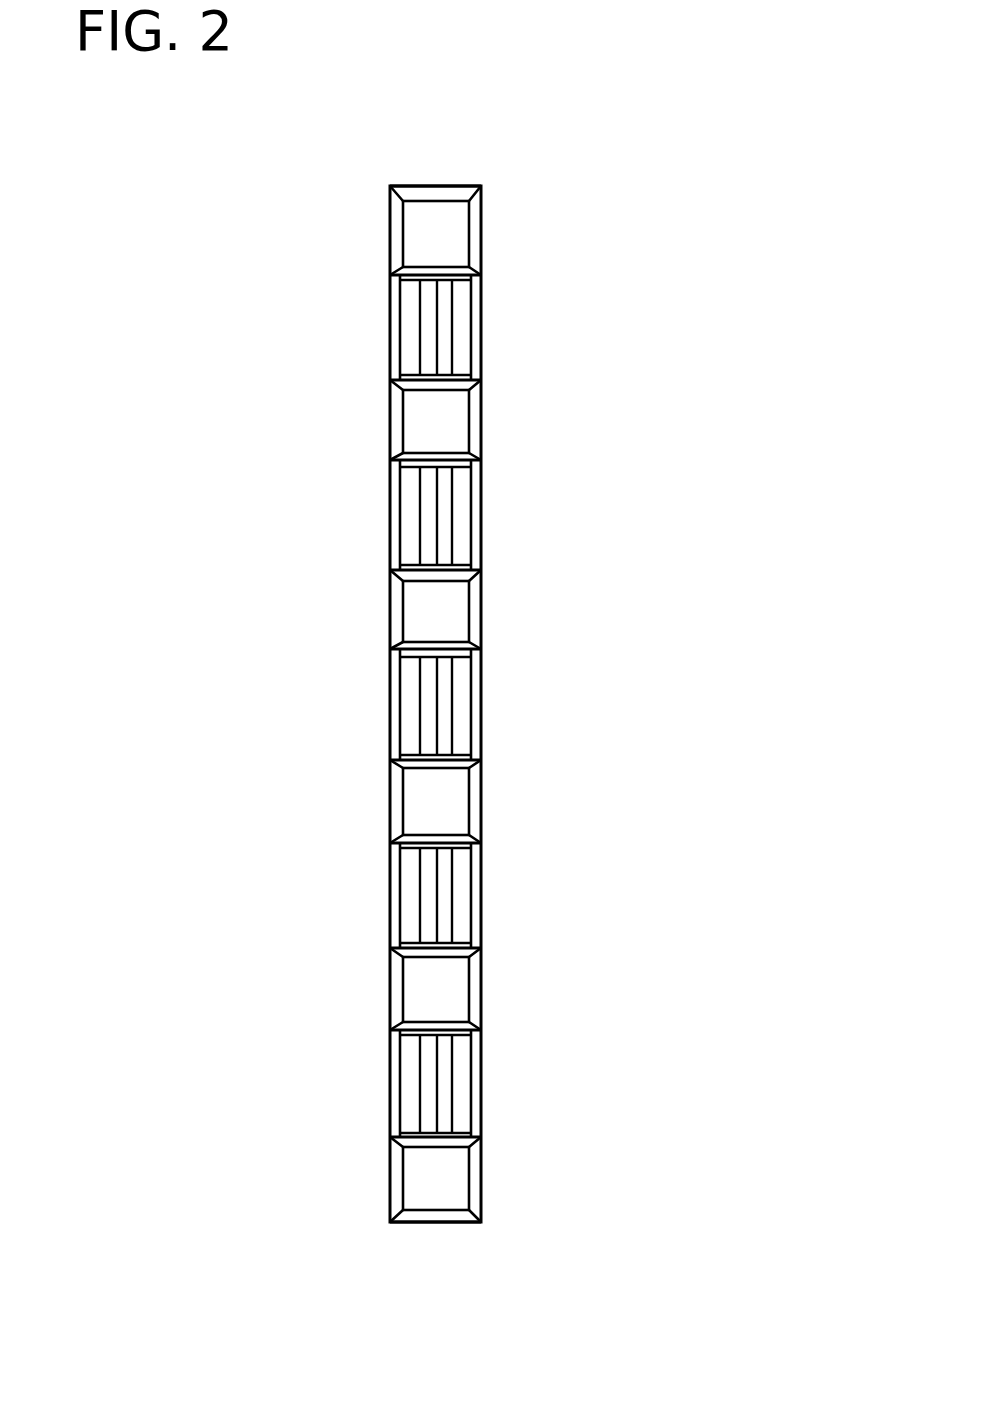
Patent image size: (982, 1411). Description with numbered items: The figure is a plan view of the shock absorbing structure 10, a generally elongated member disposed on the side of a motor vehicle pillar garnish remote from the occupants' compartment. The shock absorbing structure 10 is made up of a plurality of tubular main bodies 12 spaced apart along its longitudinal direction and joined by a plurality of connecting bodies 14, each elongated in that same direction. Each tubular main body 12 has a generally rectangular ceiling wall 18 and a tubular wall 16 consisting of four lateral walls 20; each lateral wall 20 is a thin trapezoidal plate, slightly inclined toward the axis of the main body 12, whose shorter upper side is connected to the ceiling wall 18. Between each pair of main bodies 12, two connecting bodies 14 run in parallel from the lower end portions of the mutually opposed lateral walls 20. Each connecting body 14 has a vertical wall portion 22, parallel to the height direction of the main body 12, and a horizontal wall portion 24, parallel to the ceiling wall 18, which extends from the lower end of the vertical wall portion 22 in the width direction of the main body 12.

The shock absorbing structure 10 is at (480, 717).
The tubular main body 12 is at (442, 712).
The connecting body 14 is at (430, 698).
The tubular wall 16 is at (485, 255).
The ceiling wall 18 is at (455, 229).
The lateral wall 20 is at (390, 240).
The vertical wall portion 22 is at (393, 358).
The horizontal wall portion 24 is at (410, 362).